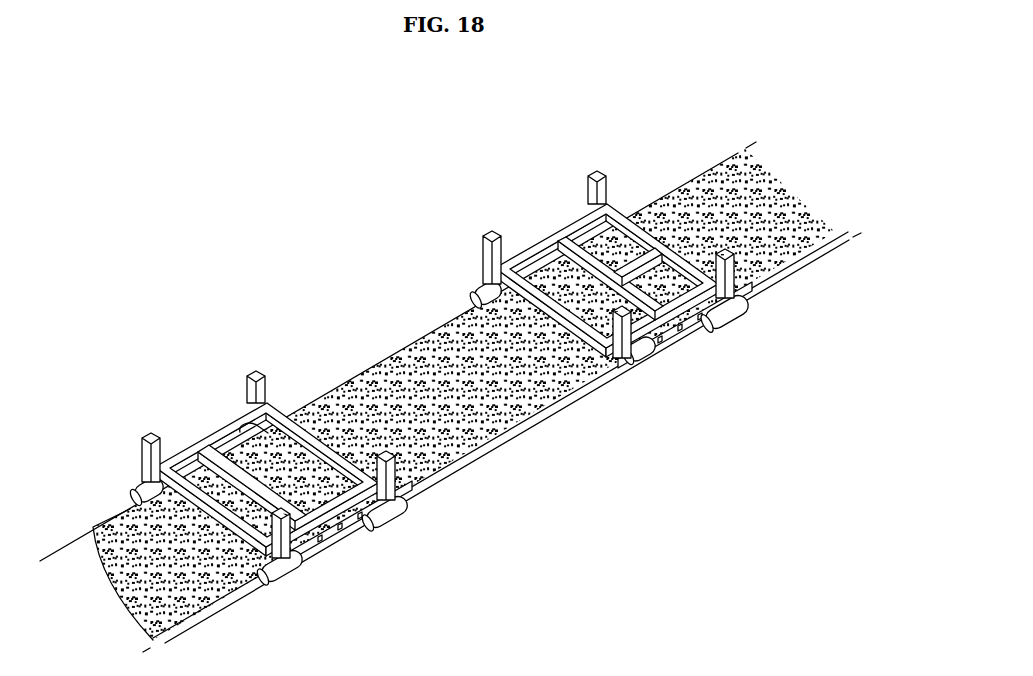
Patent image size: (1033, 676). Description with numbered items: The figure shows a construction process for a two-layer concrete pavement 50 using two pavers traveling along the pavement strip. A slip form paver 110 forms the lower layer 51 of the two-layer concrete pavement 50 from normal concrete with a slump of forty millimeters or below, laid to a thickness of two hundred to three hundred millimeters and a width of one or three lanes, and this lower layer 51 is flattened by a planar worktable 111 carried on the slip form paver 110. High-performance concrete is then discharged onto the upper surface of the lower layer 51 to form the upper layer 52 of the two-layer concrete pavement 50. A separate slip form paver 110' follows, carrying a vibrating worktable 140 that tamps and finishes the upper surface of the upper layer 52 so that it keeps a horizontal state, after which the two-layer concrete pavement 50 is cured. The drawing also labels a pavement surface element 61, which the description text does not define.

The two-layer concrete pavement 50 is at (710, 167).
The lower layer 51 is at (783, 278).
The upper layer 52 is at (665, 205).
The conveyor belt 61 is at (505, 441).
The slip form paver 110 is at (269, 481).
The separate slip form paver 110' is at (610, 298).
The planar worktable 111 is at (317, 542).
The vibrating worktable 140 is at (693, 303).